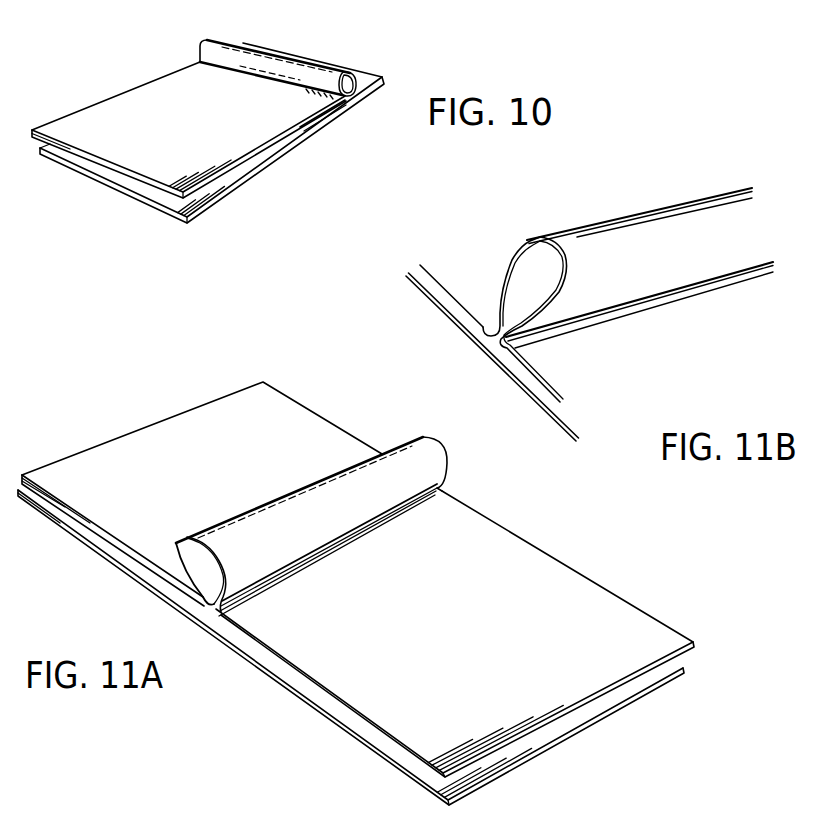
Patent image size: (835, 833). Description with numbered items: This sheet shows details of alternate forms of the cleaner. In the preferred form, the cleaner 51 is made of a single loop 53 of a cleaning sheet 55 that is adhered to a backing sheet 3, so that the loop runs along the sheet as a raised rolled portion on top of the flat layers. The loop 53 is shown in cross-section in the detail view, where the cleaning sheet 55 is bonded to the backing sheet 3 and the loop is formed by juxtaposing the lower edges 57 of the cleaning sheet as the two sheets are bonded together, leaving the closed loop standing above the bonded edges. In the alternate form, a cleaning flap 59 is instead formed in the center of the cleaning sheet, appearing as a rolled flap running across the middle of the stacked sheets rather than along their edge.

In FIG. 10, the backing sheet 3 is at (278, 167).
In FIG. 11B, the backing sheet 3 is at (535, 402).
In FIG. 10, the cleaner 51 is at (145, 82).
In FIG. 10, the loop 53 is at (322, 75).
In FIG. 11B, the loop 53 is at (692, 200).
In FIG. 10, the cleaning sheet 55 is at (317, 117).
In FIG. 11B, the cleaning sheet 55 is at (613, 358).
In FIG. 11B, the lower edges 57 is at (493, 327).
In FIG. 11A, the cleaning flap 59 is at (402, 437).